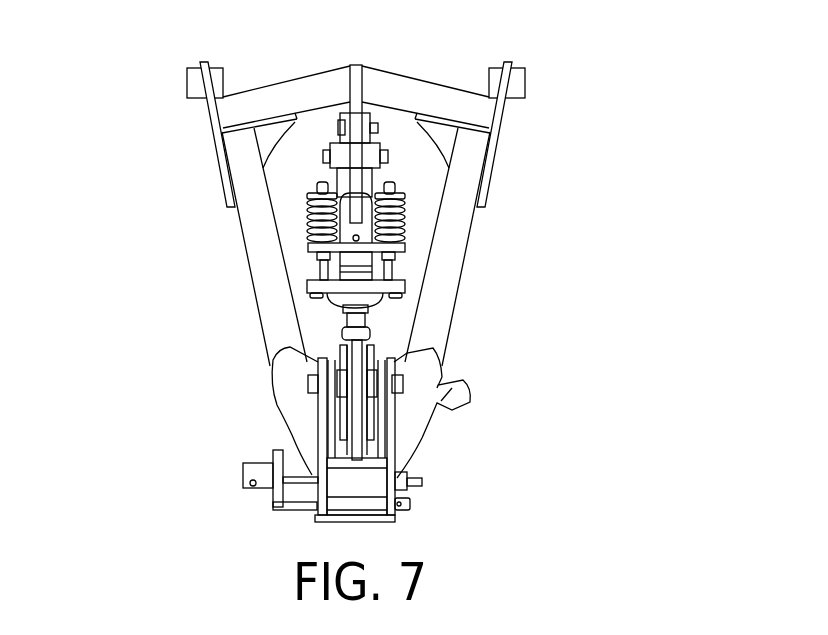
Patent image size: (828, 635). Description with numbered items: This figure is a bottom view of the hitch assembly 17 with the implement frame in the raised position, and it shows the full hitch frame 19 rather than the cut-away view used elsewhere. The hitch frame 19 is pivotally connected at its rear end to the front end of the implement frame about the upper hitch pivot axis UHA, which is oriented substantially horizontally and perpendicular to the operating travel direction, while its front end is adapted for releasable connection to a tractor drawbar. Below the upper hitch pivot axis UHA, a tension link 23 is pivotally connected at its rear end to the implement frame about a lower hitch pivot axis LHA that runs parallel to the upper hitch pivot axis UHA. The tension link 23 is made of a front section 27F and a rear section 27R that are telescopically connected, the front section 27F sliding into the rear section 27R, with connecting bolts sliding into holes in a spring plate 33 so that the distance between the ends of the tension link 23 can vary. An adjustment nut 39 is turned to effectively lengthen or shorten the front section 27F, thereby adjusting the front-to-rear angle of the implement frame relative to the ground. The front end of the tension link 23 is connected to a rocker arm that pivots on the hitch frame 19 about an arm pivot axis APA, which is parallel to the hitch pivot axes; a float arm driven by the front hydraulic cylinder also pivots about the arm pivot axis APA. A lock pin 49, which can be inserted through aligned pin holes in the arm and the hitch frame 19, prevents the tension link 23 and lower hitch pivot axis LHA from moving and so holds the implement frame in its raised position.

The hitch assembly 17 is at (574, 82).
The upper hitch pivot axis UHA is at (187, 83).
The lower hitch pivot axis LHA is at (323, 157).
The rear section of the tension link 27R is at (372, 178).
The hitch frame 19 is at (473, 229).
The spring plate 33 is at (307, 215).
The tension link 23 is at (345, 310).
The front section of the tension link 27F is at (370, 320).
The adjustment nut 39 is at (345, 333).
The arm pivot axis APA is at (403, 384).
The lock pin 49 is at (410, 503).